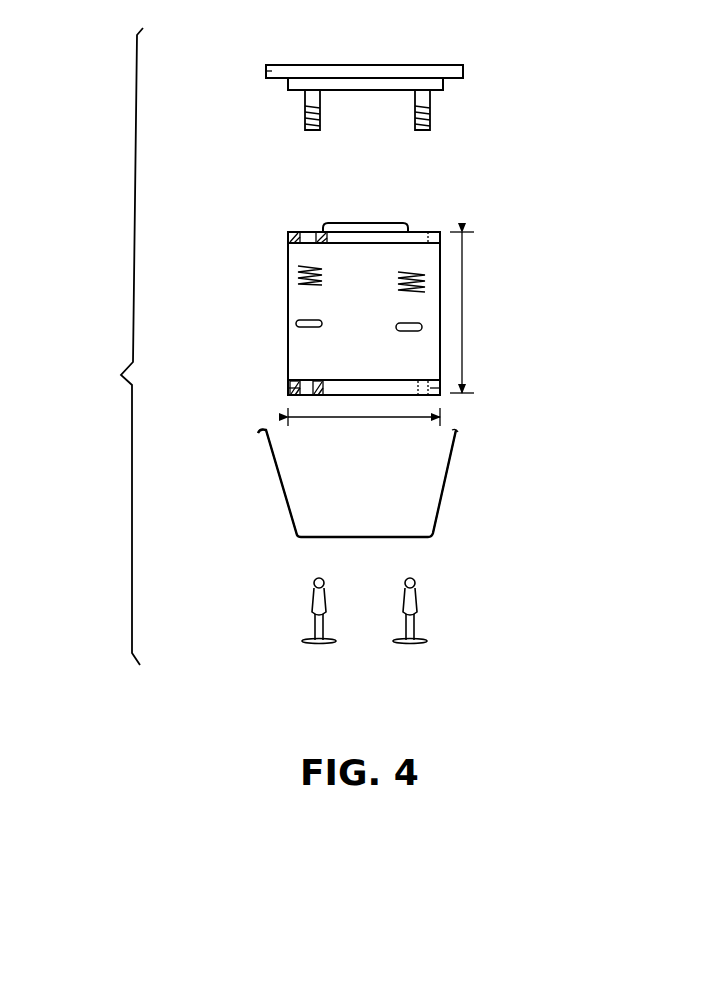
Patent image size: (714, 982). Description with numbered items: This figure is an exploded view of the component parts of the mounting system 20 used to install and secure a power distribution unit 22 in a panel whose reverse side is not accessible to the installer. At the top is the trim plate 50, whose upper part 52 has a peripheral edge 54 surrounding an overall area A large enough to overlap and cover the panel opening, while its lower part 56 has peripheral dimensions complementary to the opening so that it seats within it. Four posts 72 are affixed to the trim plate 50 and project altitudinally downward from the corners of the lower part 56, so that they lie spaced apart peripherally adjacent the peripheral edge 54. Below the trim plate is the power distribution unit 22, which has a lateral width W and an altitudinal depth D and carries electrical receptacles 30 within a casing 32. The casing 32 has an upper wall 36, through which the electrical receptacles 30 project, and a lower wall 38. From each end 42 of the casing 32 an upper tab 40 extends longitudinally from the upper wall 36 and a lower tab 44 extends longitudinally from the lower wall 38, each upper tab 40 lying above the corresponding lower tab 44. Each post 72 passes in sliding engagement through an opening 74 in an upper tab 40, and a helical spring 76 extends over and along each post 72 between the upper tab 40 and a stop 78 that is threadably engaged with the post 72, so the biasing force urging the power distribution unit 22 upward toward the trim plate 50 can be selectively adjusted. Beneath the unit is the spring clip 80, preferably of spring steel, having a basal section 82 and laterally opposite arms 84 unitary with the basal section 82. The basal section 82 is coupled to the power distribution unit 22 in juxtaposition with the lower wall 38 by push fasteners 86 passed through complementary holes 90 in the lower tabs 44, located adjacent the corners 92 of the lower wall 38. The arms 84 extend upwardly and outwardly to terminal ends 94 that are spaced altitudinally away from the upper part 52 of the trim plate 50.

The mounting system 20 is at (119, 376).
The power distribution unit 22 is at (286, 325).
The electrical receptacles 30 is at (366, 223).
The casing 32 is at (286, 297).
The upper wall 36 is at (440, 232).
The lower wall 38 is at (288, 397).
The upper tab 40 is at (288, 238).
The end 42 is at (290, 278).
The lower tab 44 is at (288, 380).
The trim plate 50 is at (465, 66).
The upper part 52 is at (276, 77).
The peripheral edge 54 is at (272, 65).
The lower part 56 is at (285, 87).
The post 72 is at (305, 97).
The opening 74 is at (417, 247).
The helical spring 76 is at (400, 285).
The stop 78 is at (396, 327).
The spring clip 80 is at (295, 539).
The basal section 82 is at (360, 537).
The arms 84 is at (282, 488).
The push fasteners 86 is at (312, 605).
The holes 90 is at (418, 385).
The corners 92 is at (288, 388).
The terminal ends 94 is at (280, 450).
The overall area A is at (363, 65).
The altitudinal depth D is at (462, 312).
The lateral width W is at (370, 420).